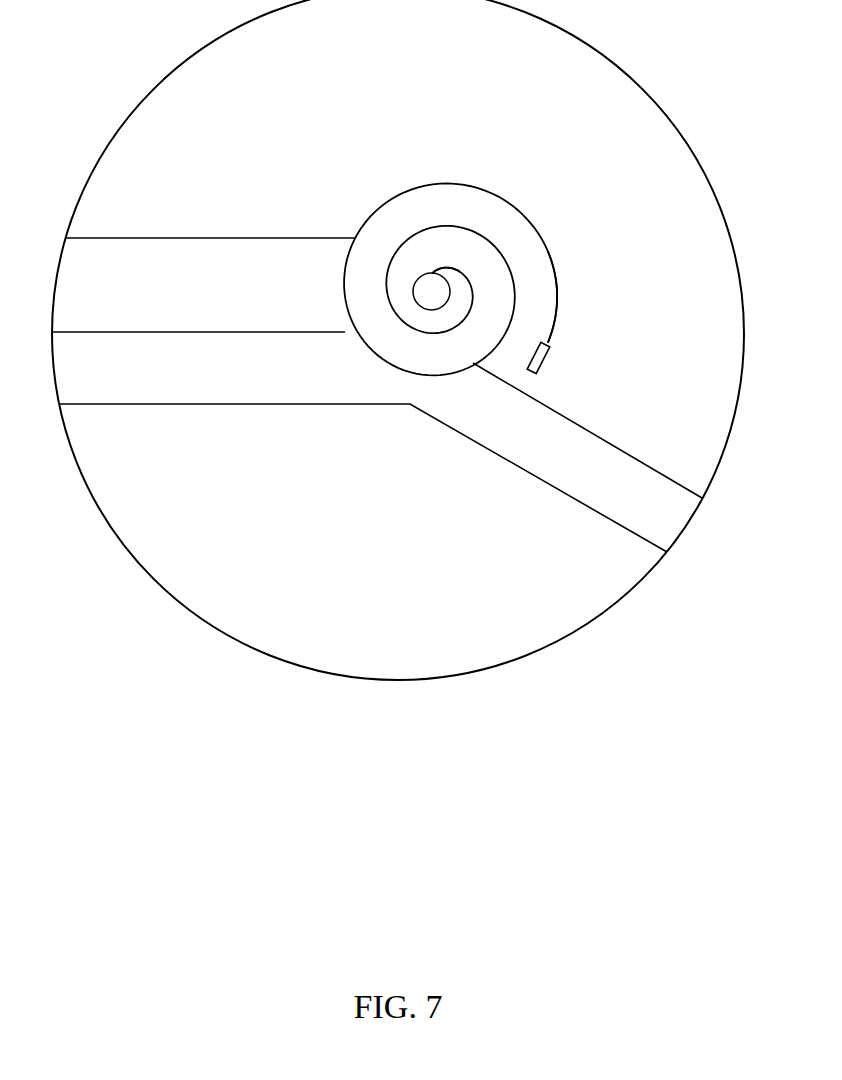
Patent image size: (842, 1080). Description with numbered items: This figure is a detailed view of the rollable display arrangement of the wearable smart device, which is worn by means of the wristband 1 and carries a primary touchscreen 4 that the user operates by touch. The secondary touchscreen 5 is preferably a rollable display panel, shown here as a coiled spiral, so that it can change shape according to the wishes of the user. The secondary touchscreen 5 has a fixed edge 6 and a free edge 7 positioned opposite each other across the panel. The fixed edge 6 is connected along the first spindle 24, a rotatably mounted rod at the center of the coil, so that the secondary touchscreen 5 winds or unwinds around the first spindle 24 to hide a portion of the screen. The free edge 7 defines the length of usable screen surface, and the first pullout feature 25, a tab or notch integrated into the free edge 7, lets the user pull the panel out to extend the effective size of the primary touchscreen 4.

The wristband 1 is at (322, 393).
The primary touchscreen 4 is at (236, 300).
The secondary touchscreen 5 is at (493, 192).
The fixed edge 6 is at (427, 270).
The free edge 7 is at (557, 345).
The first spindle 24 is at (420, 302).
The first pullout feature 25 is at (539, 360).